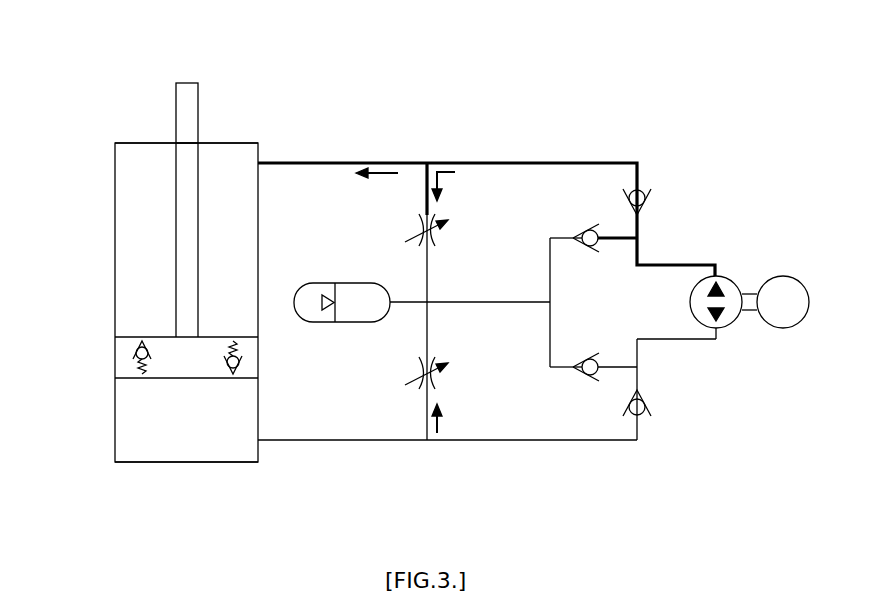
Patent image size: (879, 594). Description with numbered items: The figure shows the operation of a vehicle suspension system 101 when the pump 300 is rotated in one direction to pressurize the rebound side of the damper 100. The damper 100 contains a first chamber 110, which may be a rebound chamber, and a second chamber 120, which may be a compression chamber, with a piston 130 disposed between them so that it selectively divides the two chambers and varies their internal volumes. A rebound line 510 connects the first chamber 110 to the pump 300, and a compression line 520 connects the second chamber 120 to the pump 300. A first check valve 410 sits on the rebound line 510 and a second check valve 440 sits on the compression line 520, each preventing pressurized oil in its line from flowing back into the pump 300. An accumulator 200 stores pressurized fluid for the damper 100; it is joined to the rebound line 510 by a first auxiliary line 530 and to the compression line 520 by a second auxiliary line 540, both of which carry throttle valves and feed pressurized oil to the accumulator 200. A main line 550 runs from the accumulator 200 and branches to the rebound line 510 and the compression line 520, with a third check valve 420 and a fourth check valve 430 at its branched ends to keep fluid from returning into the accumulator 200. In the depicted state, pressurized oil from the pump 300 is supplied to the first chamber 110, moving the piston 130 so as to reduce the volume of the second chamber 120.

The damper 100 is at (146, 249).
The suspension system 101 is at (730, 46).
The first chamber 110 is at (148, 257).
The second chamber 120 is at (148, 424).
The piston 130 is at (125, 357).
The accumulator 200 is at (323, 275).
The pump 300 is at (746, 335).
The first check valve 410 is at (650, 200).
The third check valve 420 is at (582, 231).
The fourth check valve 430 is at (588, 378).
The second check valve 440 is at (646, 412).
The rebound line 510 is at (512, 160).
The compression line 520 is at (520, 445).
The first auxiliary line 530 is at (424, 277).
The second auxiliary line 540 is at (424, 339).
The main line 550 is at (501, 305).